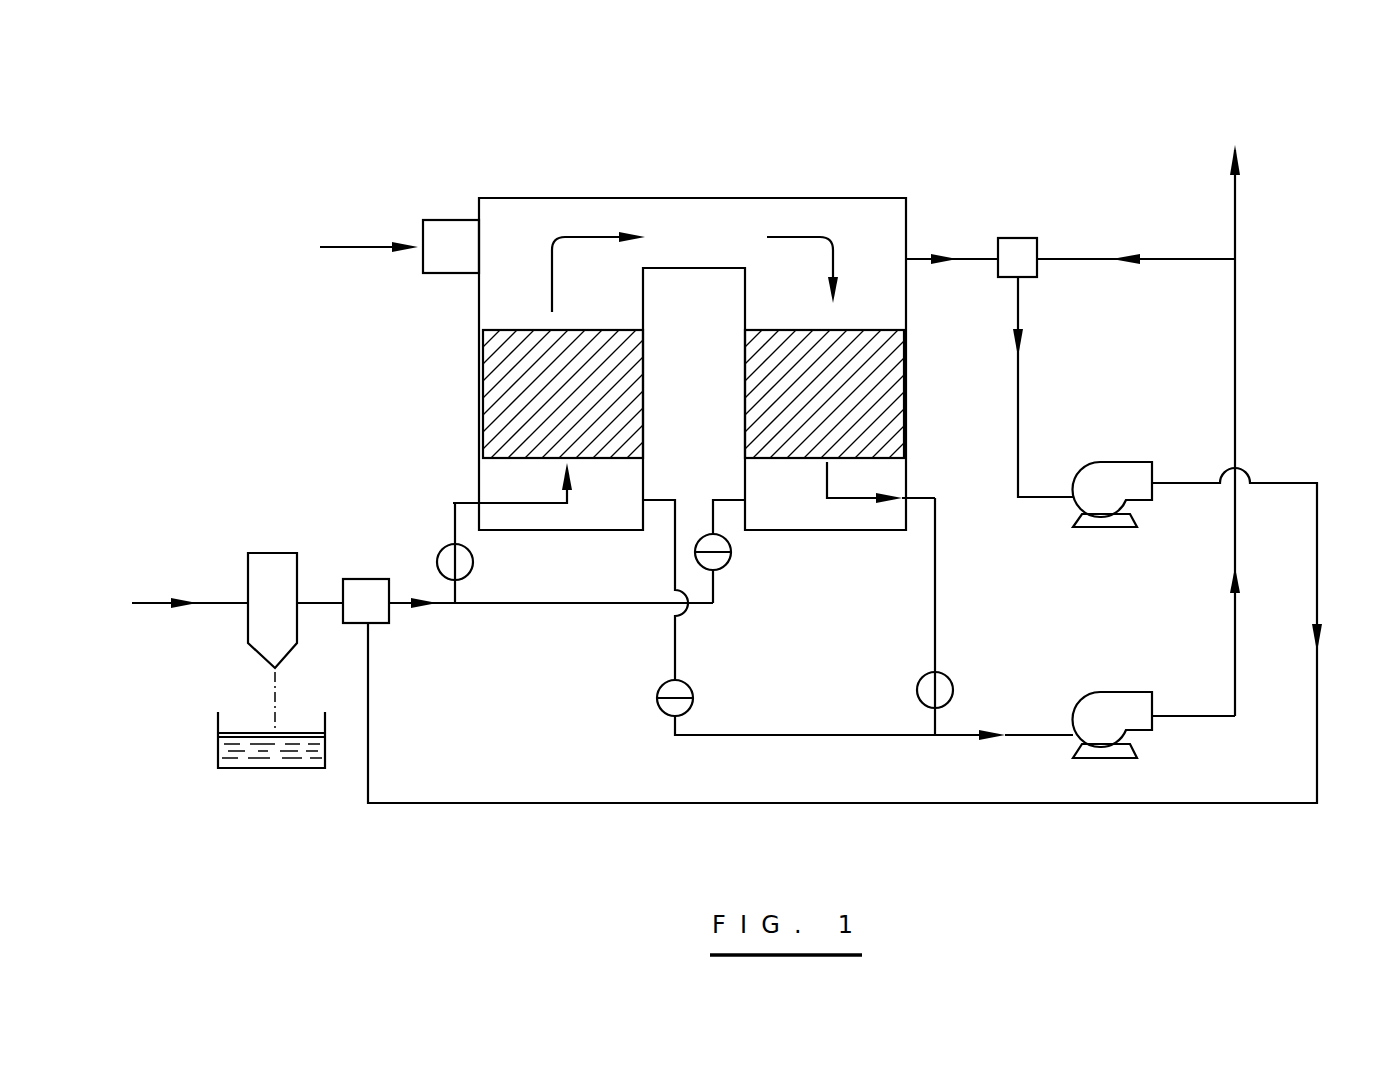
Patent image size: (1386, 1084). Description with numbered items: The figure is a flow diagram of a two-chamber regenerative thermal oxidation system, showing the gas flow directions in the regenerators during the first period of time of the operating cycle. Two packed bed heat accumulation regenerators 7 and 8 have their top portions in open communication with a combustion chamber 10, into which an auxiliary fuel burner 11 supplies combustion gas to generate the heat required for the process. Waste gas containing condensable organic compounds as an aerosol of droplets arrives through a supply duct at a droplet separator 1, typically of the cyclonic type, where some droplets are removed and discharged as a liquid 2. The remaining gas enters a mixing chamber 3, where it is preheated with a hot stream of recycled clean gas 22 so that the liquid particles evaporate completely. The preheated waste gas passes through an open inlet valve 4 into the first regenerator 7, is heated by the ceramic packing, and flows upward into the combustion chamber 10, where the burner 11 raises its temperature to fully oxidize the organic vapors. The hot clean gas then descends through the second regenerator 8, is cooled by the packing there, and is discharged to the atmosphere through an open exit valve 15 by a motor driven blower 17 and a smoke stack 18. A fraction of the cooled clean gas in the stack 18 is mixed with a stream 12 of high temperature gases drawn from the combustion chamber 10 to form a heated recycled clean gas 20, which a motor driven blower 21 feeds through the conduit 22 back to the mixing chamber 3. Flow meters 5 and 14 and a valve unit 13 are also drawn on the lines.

The droplet separator 1 is at (248, 553).
The liquid 2 is at (218, 748).
The mixing chamber 3 is at (366, 579).
The inlet valve 4 is at (475, 562).
The flow meter 5 is at (731, 555).
The first regenerator 7 is at (483, 394).
The second regenerator 8 is at (752, 387).
The combustion chamber 10 is at (678, 205).
The auxiliary fuel burner 11 is at (448, 230).
The stream of high temperature gases 12 is at (965, 258).
The valve unit 13 is at (1030, 238).
The flow meter 14 is at (695, 700).
The exit valve 15 is at (953, 693).
The motor driven blower 17 is at (1115, 710).
The smoke stack 18 is at (1237, 232).
The heated recycled clean gas 20 is at (1020, 385).
The motor driven blower 21 is at (1127, 466).
The conduit 22 is at (368, 725).